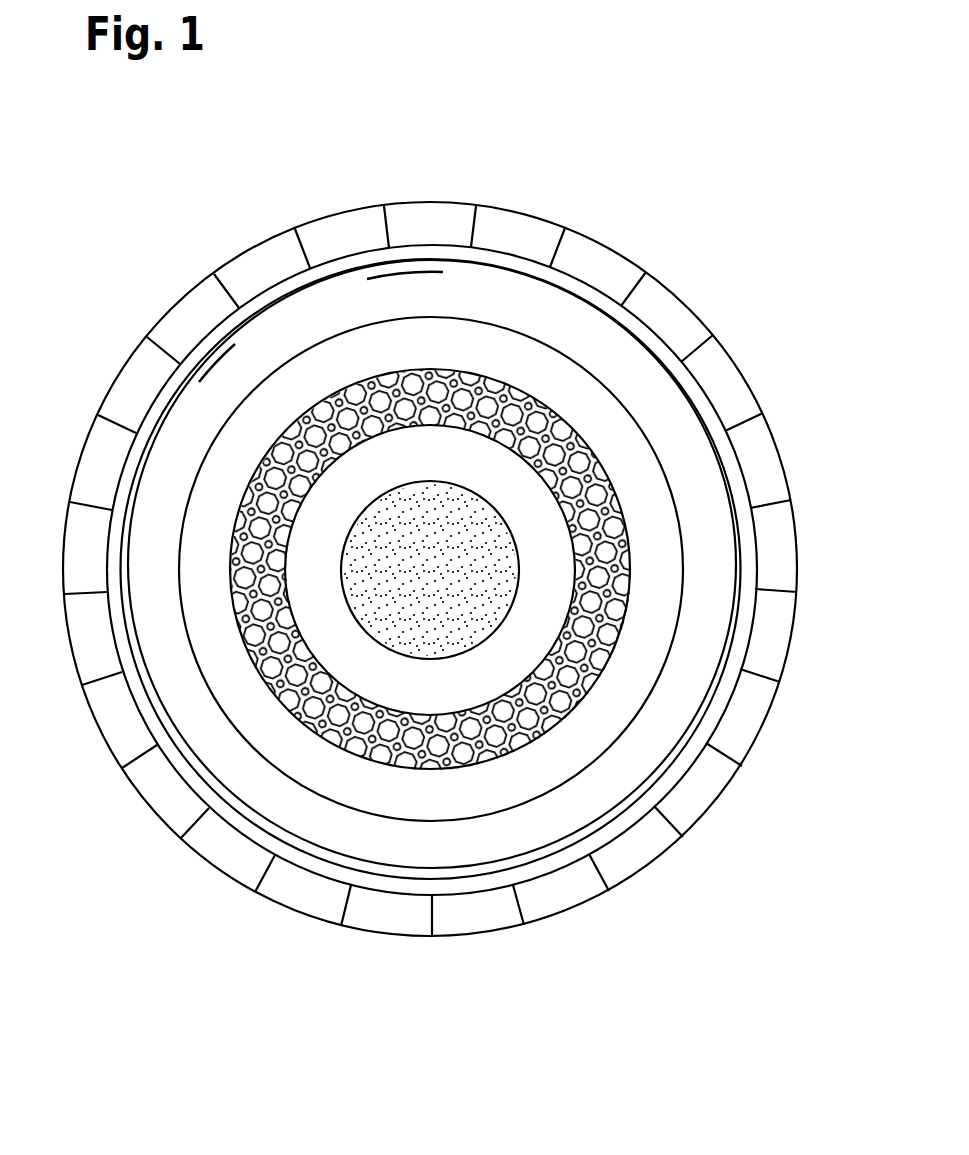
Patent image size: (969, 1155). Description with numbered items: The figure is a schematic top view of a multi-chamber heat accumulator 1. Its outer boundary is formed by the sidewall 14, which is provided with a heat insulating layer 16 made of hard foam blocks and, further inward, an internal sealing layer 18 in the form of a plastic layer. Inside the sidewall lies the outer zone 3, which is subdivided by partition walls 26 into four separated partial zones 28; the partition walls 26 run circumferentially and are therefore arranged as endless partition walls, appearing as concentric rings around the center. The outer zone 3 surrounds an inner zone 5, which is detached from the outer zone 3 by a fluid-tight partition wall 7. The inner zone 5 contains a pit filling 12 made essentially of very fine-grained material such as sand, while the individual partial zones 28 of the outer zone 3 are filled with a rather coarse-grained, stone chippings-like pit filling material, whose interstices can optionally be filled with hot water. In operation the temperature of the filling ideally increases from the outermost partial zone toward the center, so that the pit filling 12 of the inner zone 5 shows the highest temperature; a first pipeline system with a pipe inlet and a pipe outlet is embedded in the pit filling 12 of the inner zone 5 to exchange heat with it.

The multi-chamber heat accumulator 1 is at (772, 312).
The outer zone 3 is at (532, 840).
The inner zone 5 is at (377, 413).
The fluid-tight partition wall 7 is at (353, 485).
The pit filling 12 is at (568, 674).
The sidewall 14 is at (780, 548).
The heat insulating layer 16 is at (772, 618).
The internal sealing layer 18 is at (720, 687).
The partition walls 26 is at (260, 685).
The partial zones 28 is at (707, 483).